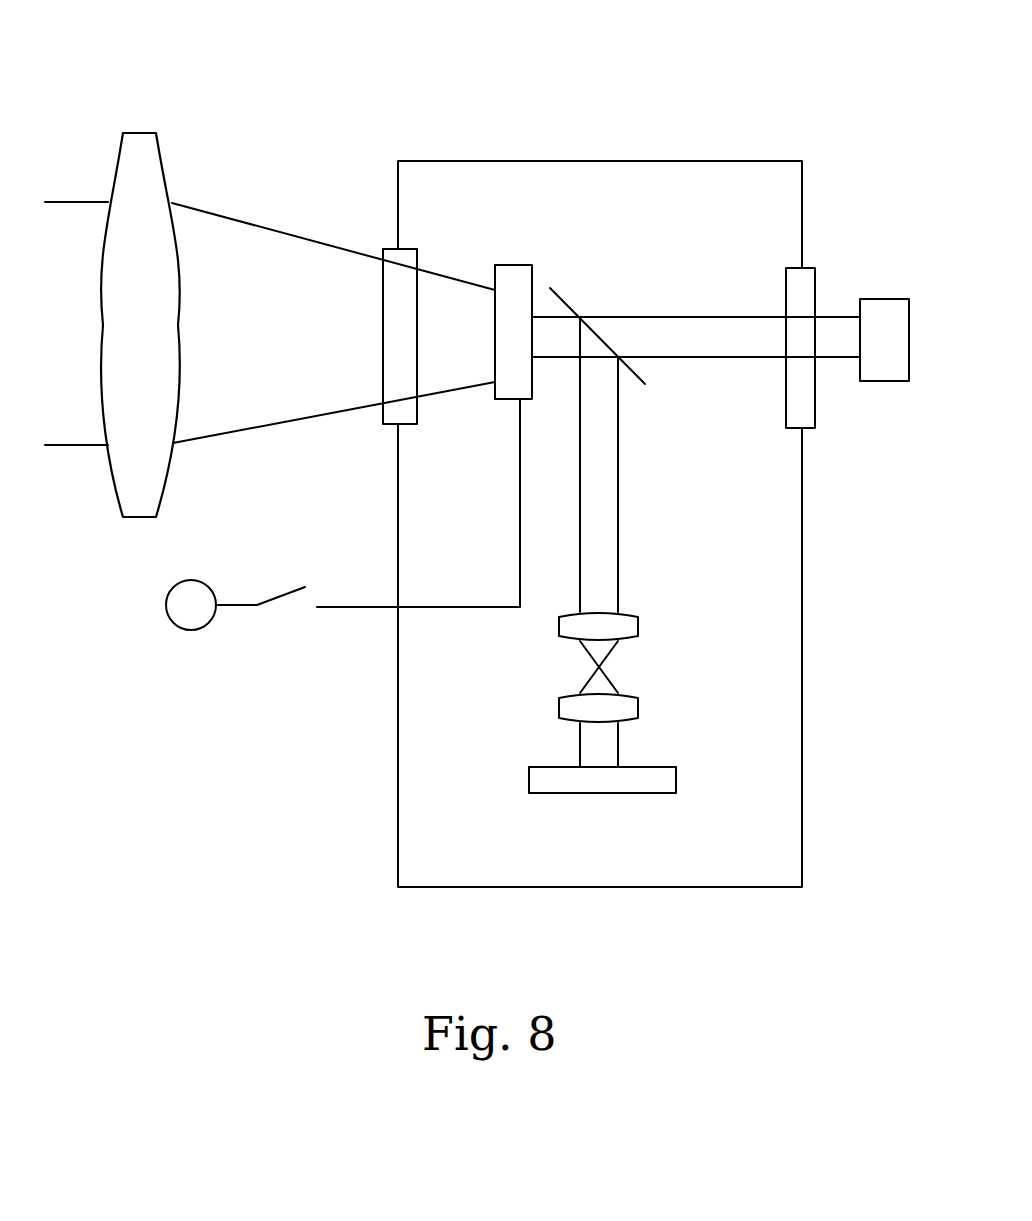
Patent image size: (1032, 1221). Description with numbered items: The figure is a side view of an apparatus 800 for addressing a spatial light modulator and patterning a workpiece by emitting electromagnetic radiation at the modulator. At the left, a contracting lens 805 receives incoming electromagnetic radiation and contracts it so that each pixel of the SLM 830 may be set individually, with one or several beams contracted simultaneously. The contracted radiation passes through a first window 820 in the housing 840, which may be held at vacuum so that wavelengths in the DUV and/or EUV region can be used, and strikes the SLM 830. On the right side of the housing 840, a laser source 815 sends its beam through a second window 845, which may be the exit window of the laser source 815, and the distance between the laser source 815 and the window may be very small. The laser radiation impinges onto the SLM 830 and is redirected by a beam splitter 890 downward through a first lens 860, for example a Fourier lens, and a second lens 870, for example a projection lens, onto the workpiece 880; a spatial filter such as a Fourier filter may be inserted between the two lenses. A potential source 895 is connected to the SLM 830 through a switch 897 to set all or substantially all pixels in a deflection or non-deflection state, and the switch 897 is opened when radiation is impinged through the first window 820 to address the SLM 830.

The apparatus 800 is at (437, 40).
The contracting lens 805 is at (135, 490).
The laser source 815 is at (898, 373).
The first window 820 is at (400, 290).
The SLM 830 is at (513, 291).
The housing 840 is at (738, 856).
The second window 845 is at (799, 294).
The first lens 860 is at (573, 625).
The second lens 870 is at (570, 698).
The workpiece 880 is at (567, 775).
The beam splitter 890 is at (603, 333).
The potential source 895 is at (202, 608).
The switch 897 is at (280, 595).